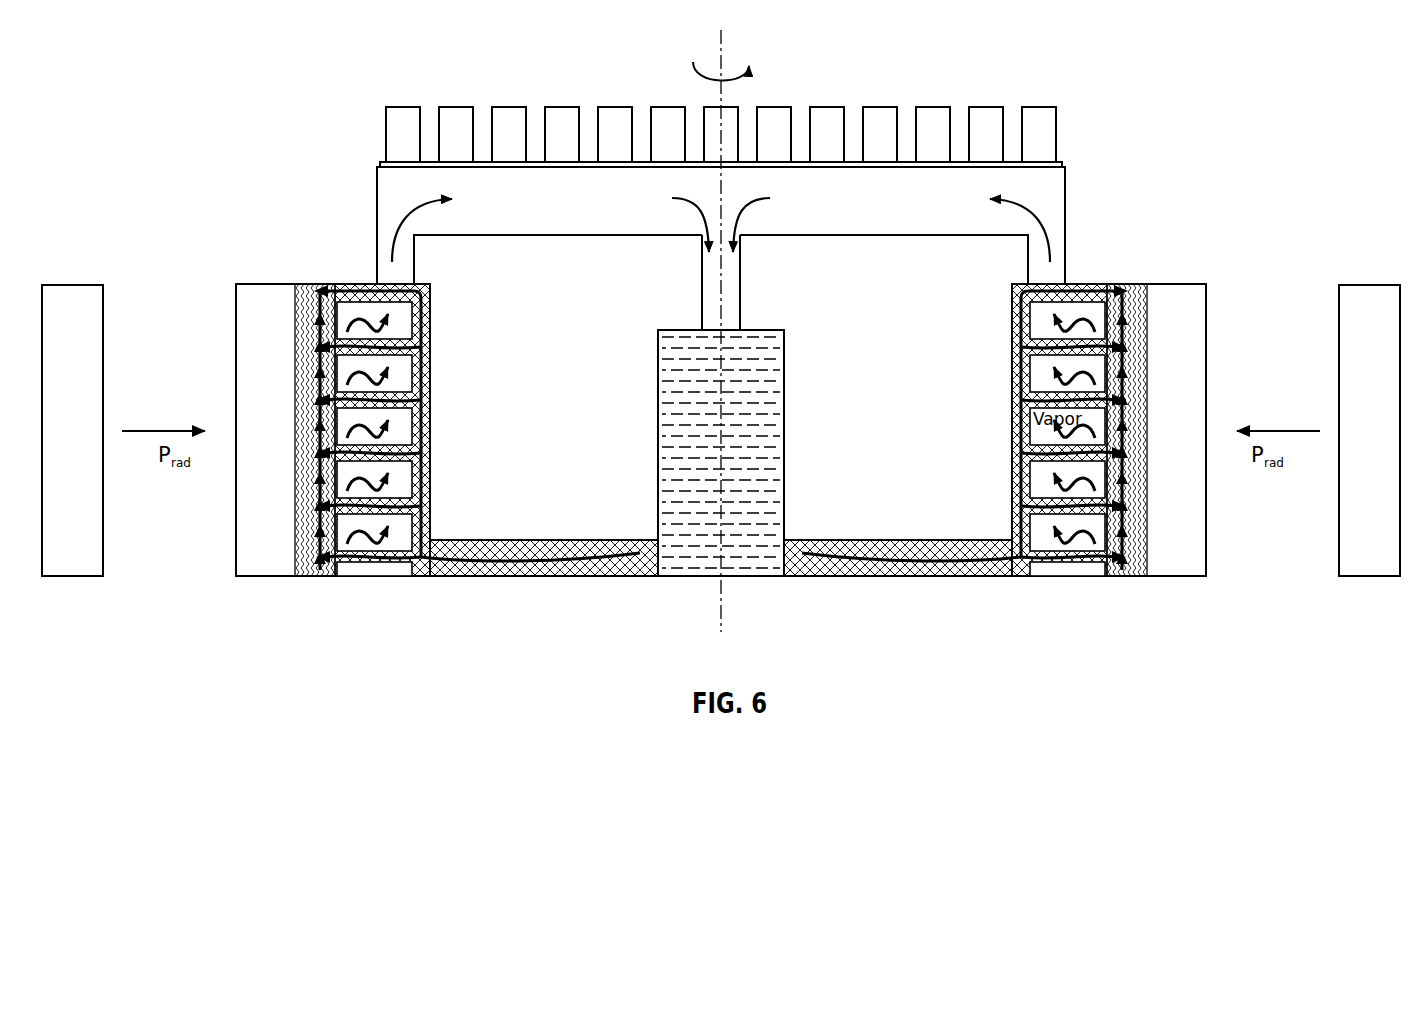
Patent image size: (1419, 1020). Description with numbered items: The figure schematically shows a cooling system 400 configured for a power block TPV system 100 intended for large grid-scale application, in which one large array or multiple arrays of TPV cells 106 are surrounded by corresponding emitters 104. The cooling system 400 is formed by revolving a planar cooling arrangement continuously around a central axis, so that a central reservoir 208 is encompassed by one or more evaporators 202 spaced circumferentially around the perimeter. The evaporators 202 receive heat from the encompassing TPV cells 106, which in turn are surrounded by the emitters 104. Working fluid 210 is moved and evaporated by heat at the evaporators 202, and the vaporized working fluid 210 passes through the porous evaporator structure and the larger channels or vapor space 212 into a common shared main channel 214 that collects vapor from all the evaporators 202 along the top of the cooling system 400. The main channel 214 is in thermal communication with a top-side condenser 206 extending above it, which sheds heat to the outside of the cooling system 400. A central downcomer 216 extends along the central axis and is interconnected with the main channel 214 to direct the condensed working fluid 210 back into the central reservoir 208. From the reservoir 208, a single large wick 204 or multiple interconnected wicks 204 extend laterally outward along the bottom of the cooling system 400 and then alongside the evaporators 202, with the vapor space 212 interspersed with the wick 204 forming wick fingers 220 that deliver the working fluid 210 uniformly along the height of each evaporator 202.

The TPV system 100 is at (174, 272).
The emitter 104 is at (70, 285).
The TPV cell 106 is at (245, 320).
The evaporator 202 is at (308, 285).
The wick 204 is at (517, 566).
The condenser 206 is at (563, 107).
The central reservoir 208 is at (657, 378).
The working fluid 210 is at (668, 432).
The vapor space 212 is at (393, 562).
The main channel 214 is at (487, 197).
The central downcomer 216 is at (732, 297).
The wick fingers 220 is at (360, 565).
The cooling system 400 is at (1112, 95).